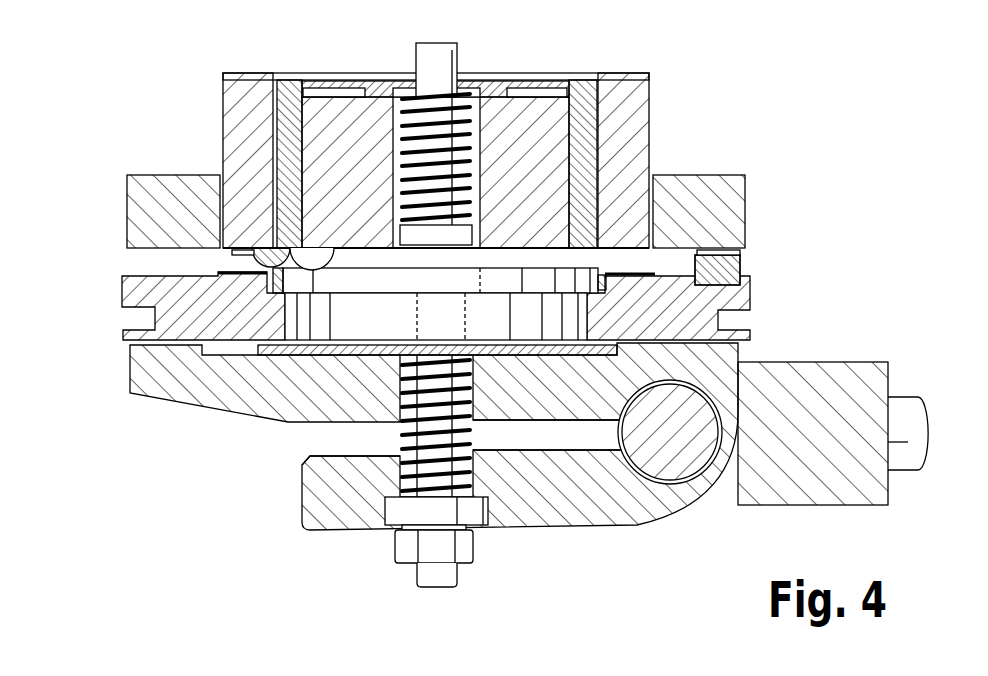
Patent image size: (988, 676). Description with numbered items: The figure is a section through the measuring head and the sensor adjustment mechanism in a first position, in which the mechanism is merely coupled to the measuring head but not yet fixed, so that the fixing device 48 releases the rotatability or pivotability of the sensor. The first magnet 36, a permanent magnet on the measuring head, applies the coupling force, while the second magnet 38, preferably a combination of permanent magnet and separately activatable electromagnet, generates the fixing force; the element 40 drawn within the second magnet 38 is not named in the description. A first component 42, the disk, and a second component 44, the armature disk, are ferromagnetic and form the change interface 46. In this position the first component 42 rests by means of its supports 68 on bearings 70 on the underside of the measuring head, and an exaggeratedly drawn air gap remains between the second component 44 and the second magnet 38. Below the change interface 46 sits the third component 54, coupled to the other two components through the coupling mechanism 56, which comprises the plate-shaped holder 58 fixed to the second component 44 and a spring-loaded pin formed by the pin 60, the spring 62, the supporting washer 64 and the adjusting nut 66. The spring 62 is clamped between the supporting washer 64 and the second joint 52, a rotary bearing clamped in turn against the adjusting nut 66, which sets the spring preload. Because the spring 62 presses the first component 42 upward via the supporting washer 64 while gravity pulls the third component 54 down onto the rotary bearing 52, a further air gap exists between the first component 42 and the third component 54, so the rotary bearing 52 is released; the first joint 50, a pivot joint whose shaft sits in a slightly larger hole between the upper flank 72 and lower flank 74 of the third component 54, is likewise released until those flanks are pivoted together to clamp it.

The first magnet 36 is at (702, 195).
The second magnet 38 is at (327, 83).
The piston 40 is at (533, 120).
The first component 42 is at (750, 300).
The second component 44 is at (513, 275).
The change interface 46 is at (98, 318).
The fixing device 48 is at (138, 466).
The first joint 50 is at (672, 458).
The second joint 52 is at (398, 515).
The third component 54 is at (212, 388).
The coupling mechanism 56 is at (386, 436).
The holder 58 is at (388, 326).
The pin 60 is at (435, 580).
The spring 62 is at (470, 442).
The supporting washer 64 is at (620, 368).
The adjusting nut 66 is at (460, 548).
The supports 68 is at (292, 250).
The bearings 70 is at (250, 258).
The upper flank 72 is at (147, 365).
The lower flank 74 is at (303, 492).